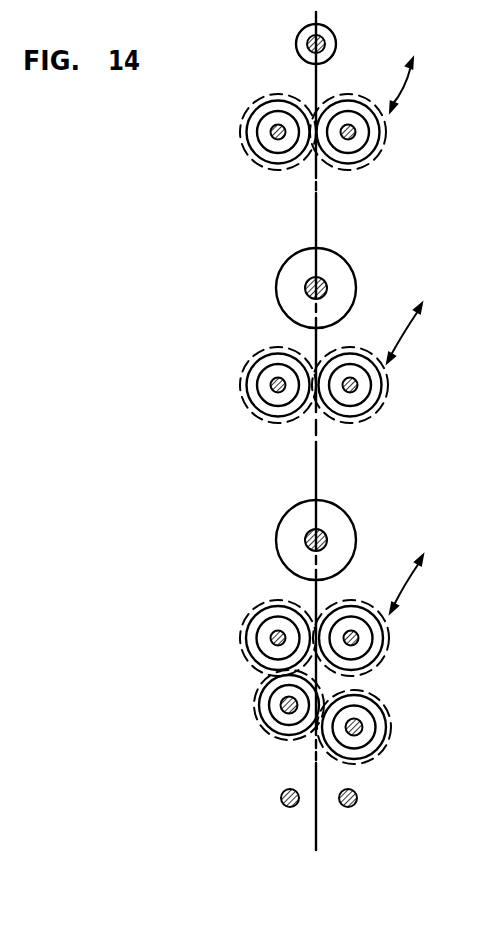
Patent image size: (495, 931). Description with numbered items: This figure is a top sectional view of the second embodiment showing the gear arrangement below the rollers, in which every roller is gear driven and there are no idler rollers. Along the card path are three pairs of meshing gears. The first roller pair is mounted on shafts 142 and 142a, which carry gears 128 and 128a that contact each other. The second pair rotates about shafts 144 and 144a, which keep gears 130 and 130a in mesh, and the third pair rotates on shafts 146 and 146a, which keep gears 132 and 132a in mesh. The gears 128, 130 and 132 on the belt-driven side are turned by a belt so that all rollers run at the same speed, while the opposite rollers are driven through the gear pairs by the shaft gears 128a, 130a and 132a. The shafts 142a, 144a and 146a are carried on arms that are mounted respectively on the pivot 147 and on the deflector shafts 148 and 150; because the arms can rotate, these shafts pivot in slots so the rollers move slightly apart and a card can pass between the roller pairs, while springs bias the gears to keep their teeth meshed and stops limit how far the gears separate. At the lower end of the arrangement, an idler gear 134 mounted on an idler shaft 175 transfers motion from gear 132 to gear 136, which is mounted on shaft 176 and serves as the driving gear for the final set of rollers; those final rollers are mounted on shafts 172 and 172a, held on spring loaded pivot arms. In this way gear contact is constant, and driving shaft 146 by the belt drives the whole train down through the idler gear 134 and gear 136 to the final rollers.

The pivot 147 is at (325, 44).
The gear 128 is at (255, 115).
The gear 128a is at (367, 158).
The shaft 142 is at (277, 131).
The shaft 142a is at (353, 131).
The deflector shaft 148 is at (327, 288).
The gear 130 is at (257, 363).
The gear 130a is at (383, 383).
The shaft 144 is at (277, 385).
The shaft 144a is at (350, 385).
The deflector shaft 150 is at (328, 540).
The gear 132 is at (270, 613).
The gear 132a is at (390, 613).
The shaft 146 is at (278, 638).
The shaft 146a is at (363, 640).
The idler gear 134 is at (280, 725).
The idler shaft 175 is at (290, 705).
The gear 136 is at (390, 710).
The shaft 176 is at (363, 730).
The shaft 172 is at (283, 797).
The shaft 172a is at (355, 797).